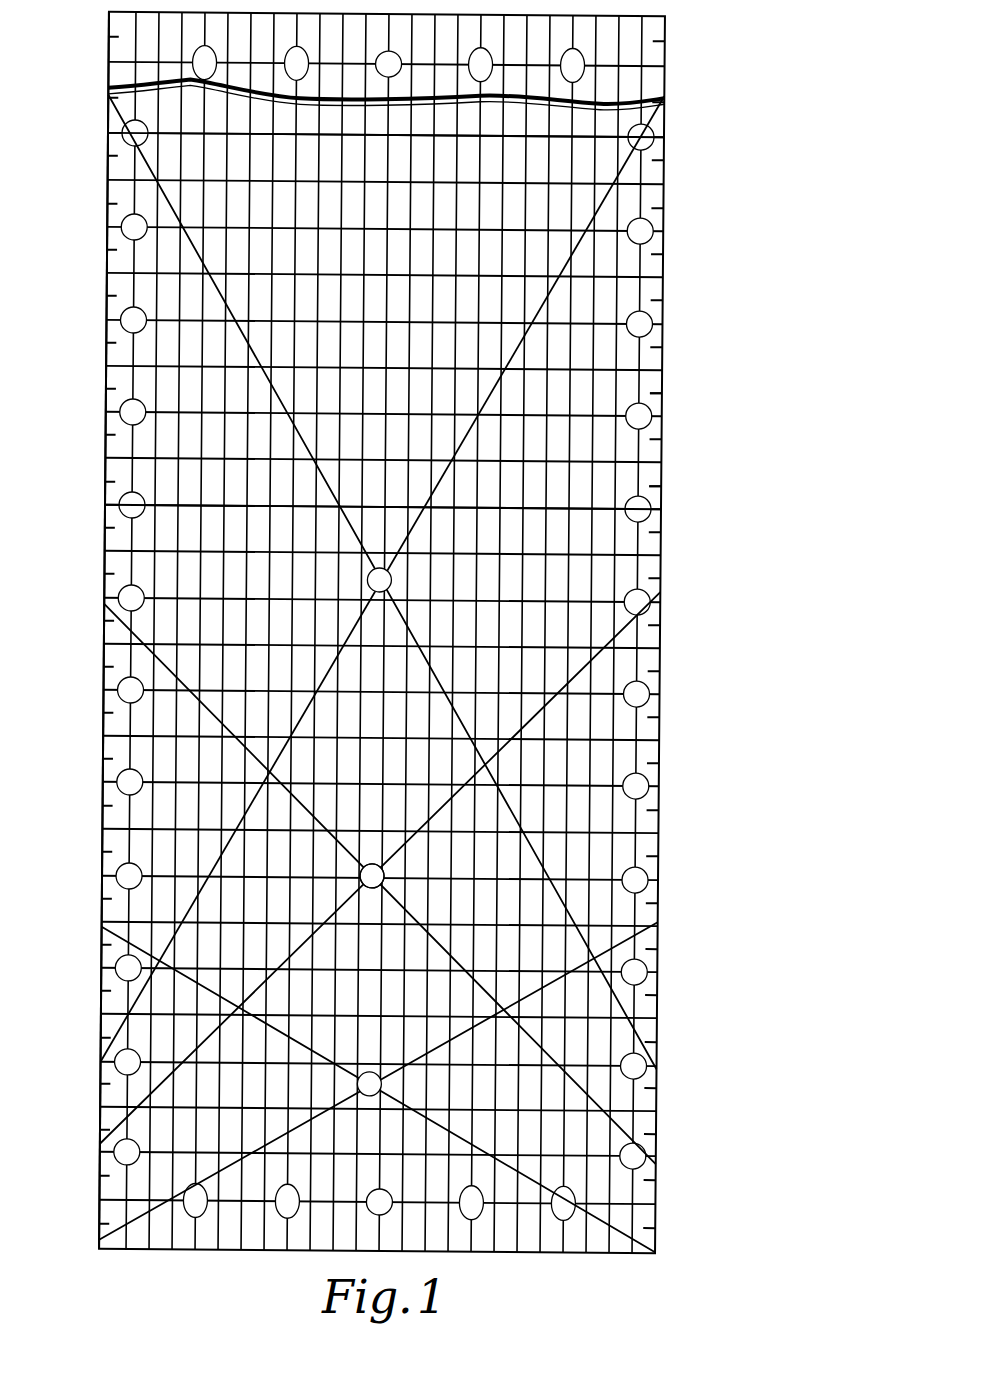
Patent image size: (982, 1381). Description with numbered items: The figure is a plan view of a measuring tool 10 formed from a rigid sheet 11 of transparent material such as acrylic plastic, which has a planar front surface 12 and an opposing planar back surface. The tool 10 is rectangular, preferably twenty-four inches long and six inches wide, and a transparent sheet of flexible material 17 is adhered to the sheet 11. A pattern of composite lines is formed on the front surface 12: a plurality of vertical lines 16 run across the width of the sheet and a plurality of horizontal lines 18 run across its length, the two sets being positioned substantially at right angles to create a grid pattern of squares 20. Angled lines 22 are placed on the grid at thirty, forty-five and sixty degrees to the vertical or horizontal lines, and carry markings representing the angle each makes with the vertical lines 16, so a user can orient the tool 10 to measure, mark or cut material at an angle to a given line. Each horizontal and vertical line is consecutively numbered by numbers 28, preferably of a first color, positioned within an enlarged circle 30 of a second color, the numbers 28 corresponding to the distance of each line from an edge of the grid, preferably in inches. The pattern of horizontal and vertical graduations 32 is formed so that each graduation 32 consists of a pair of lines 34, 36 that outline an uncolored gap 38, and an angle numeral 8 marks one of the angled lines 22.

The angle numeral 8 is at (385, 862).
The tool 10 is at (688, 66).
The sheet 11 is at (107, 170).
The front surface 12 is at (140, 37).
The vertical lines 16 is at (570, 297).
The transparent sheet of flexible material 17 is at (600, 755).
The horizontal lines 18 is at (602, 503).
The squares 20 is at (540, 590).
The angled lines 22 is at (128, 995).
The numbers 28 is at (666, 134).
The enlarged circle 30 is at (650, 150).
The graduations 32 is at (371, 577).
The line 34 is at (638, 380).
The line 36 is at (645, 463).
The uncolored gap 38 is at (653, 208).